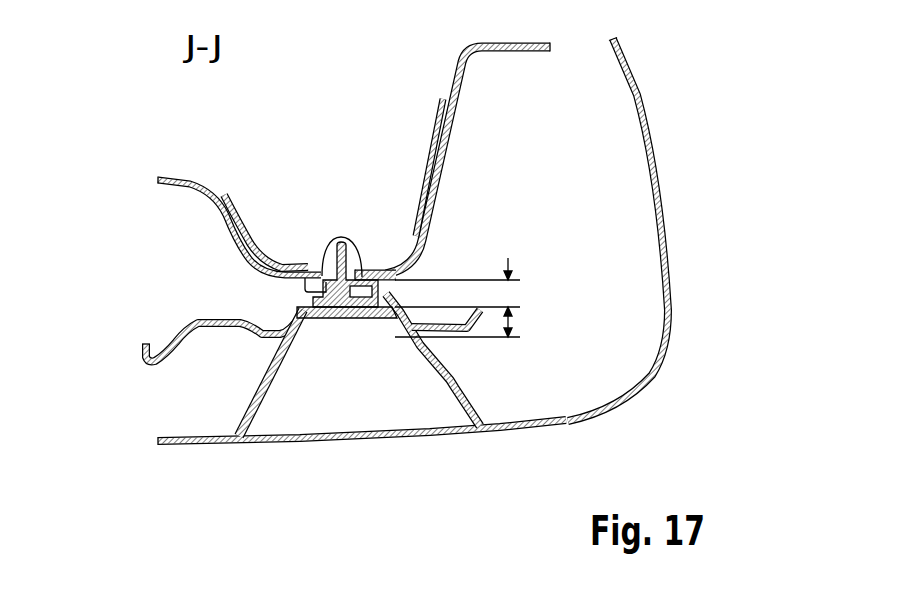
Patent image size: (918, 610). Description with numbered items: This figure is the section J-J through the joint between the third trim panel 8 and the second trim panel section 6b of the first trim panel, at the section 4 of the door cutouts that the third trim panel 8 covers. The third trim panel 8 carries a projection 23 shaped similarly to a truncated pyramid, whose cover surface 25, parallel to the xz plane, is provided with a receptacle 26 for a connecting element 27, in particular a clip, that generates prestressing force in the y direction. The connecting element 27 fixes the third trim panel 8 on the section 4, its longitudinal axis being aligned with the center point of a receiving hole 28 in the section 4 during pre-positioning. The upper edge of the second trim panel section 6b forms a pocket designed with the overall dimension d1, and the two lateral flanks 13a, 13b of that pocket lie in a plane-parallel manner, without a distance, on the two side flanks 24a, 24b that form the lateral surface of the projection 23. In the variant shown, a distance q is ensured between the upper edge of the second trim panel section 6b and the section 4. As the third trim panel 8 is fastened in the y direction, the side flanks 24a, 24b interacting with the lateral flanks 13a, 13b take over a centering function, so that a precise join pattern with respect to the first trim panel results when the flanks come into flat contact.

The section 4 is at (437, 123).
The third trim panel 8 is at (653, 173).
The second trim panel section 6b is at (217, 322).
The projection 23 is at (357, 413).
The lateral flank 13a is at (289, 408).
The side flank 24a is at (314, 312).
The lateral flank 13b is at (426, 400).
The side flank 24b is at (383, 335).
The cover surface 25 is at (352, 318).
The receptacle 26 is at (373, 267).
The connecting element 27 is at (352, 240).
The receiving hole 28 is at (330, 262).
The distance q is at (507, 296).
The overall dimension d1 is at (510, 323).